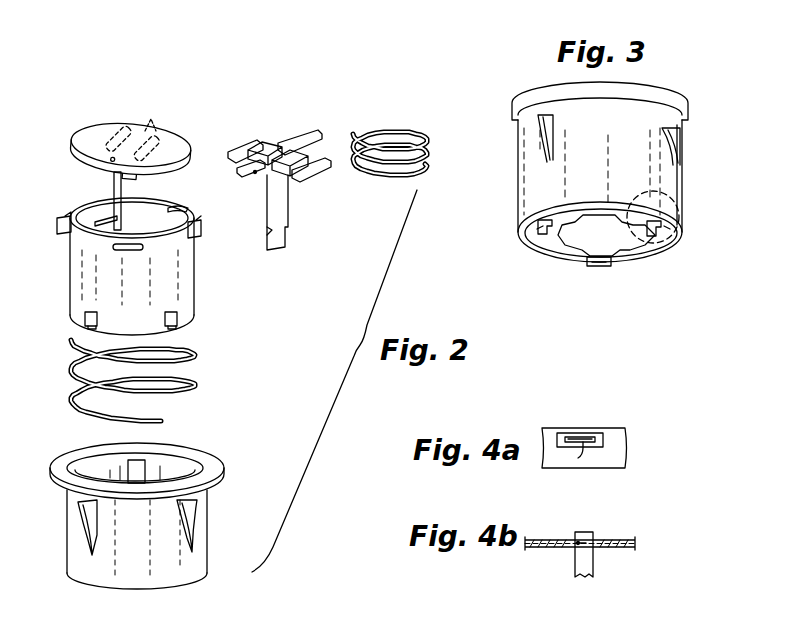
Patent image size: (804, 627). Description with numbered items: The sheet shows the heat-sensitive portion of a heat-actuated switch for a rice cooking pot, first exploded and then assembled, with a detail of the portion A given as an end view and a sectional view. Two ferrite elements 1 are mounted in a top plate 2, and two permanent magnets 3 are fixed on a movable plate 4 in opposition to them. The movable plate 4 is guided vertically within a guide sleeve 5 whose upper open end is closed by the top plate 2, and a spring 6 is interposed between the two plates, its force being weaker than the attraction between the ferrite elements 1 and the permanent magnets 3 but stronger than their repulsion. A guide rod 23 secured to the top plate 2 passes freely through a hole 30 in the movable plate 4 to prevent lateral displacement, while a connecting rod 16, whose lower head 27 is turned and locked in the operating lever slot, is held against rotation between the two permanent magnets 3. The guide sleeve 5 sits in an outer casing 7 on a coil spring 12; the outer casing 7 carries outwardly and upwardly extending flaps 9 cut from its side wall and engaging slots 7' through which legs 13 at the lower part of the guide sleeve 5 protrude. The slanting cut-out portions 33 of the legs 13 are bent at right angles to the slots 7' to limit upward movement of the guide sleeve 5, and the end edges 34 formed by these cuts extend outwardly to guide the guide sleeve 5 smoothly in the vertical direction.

In FIG. 2, the ferrite elements 1 is at (150, 128).
In FIG. 2, the top plate 2 is at (110, 130).
In FIG. 2, the permanent magnets 3 is at (268, 145).
In FIG. 2, the movable plate 4 is at (300, 140).
In FIG. 2, the guide sleeve 5 is at (190, 262).
In FIG. 2, the spring 6 is at (373, 178).
In FIG. 2, the outer casing 7 is at (140, 516).
In FIG. 3, the outer casing 7 is at (588, 172).
In FIG. 3, the engaging slots 7' is at (598, 252).
In FIG. 4A, the engaging slots 7' is at (597, 446).
In FIG. 4B, the engaging slots 7' is at (580, 562).
In FIG. 2, the flaps 9 is at (92, 538).
In FIG. 3, the flaps 9 is at (552, 126).
In FIG. 2, the coil spring 12 is at (192, 373).
In FIG. 2, the legs 13 is at (85, 313).
In FIG. 3, the legs 13 is at (542, 232).
In FIG. 4A, the legs 13 is at (580, 452).
In FIG. 4B, the legs 13 is at (580, 540).
In FIG. 2, the connecting rod 16 is at (288, 208).
In FIG. 2, the guide rod 23 is at (114, 187).
In FIG. 2, the lower head 27 is at (285, 232).
In FIG. 2, the hole 30 is at (257, 177).
In FIG. 2, the cut-out portions 33 is at (86, 324).
In FIG. 4A, the cut-out portions 33 is at (582, 437).
In FIG. 4B, the cut-out portions 33 is at (575, 545).
In FIG. 3, the end edges 34 is at (550, 238).
In FIG. 4A, the end edges 34 is at (597, 437).
In FIG. 4B, the end edges 34 is at (577, 543).
In FIG. 3, the portion A is at (650, 192).